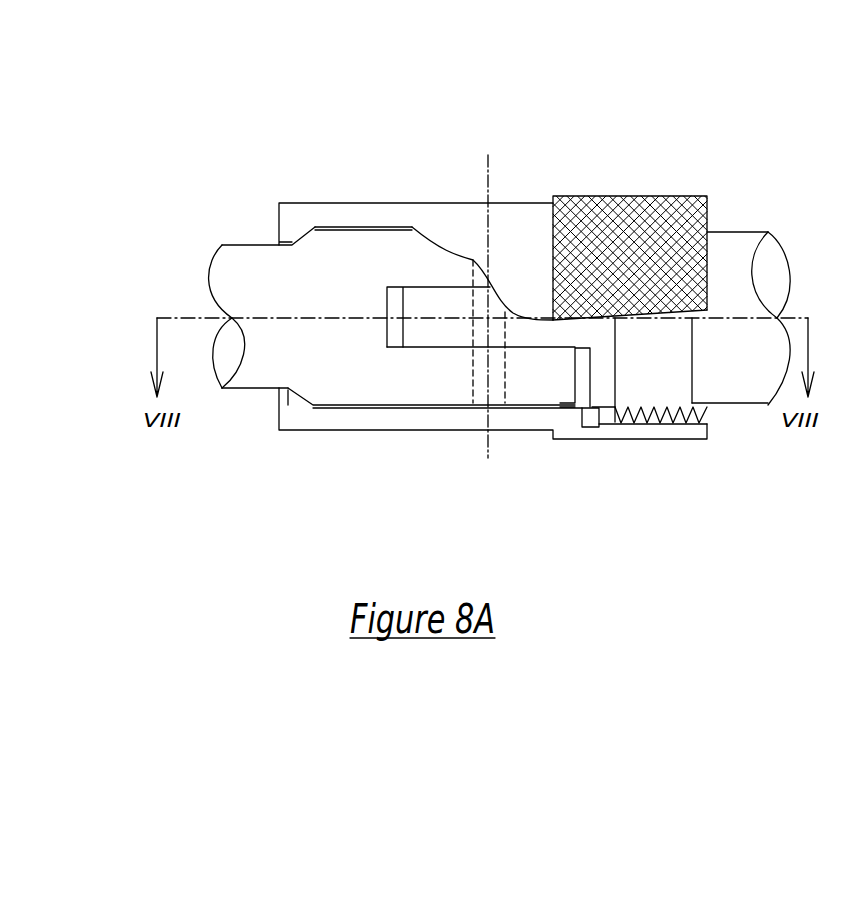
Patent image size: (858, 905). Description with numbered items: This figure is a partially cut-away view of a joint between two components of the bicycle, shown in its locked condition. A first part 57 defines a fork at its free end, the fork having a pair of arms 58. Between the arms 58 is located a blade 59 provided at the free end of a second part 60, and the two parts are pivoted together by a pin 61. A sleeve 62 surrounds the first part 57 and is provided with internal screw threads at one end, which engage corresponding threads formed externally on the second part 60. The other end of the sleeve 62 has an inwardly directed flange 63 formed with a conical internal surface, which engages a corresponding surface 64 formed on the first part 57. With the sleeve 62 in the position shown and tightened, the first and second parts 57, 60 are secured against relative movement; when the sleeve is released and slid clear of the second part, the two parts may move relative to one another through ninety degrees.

The first part 57 is at (342, 278).
The arms 58 is at (440, 375).
The blade 59 is at (443, 307).
The second part 60 is at (727, 297).
The pin 61 is at (488, 365).
The sleeve 62 is at (612, 260).
The inwardly directed flange 63 is at (290, 392).
The corresponding surface 64 is at (279, 400).